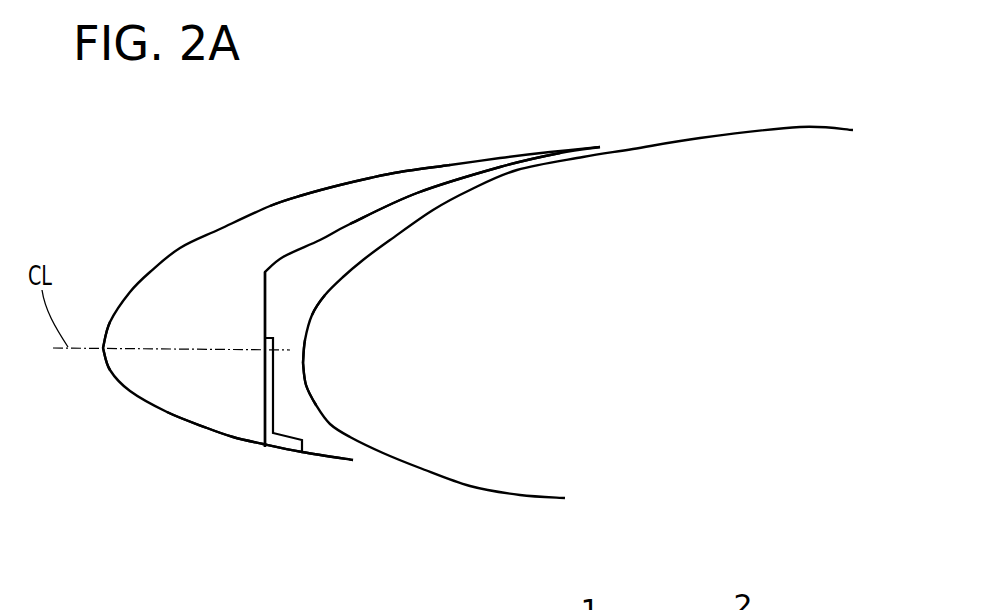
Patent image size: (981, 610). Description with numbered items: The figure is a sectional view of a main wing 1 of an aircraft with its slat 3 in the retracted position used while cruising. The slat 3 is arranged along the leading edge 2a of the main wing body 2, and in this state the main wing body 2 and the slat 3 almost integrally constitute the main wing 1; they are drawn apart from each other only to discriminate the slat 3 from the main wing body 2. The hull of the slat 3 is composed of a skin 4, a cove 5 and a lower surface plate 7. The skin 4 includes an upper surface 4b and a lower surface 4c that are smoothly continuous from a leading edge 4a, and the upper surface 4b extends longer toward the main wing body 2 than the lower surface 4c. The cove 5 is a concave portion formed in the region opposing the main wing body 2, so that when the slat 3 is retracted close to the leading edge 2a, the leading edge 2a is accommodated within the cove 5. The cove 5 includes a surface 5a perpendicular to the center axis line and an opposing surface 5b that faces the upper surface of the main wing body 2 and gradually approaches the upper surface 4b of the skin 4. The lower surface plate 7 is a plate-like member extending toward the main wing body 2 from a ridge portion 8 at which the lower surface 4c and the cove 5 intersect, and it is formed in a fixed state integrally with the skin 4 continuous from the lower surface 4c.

The main wing 1 is at (638, 94).
The main wing body 2 is at (726, 126).
The leading edge 2a is at (300, 355).
The slat 3 is at (300, 192).
The skin 4 is at (178, 248).
The leading edge 4a is at (95, 351).
The upper surface 4b is at (375, 176).
The lower surface 4c is at (227, 438).
The cove 5 is at (266, 310).
The surface 5a is at (266, 333).
The opposing surface 5b is at (412, 200).
The lower surface plate 7 is at (328, 456).
The ridge portion 8 is at (265, 448).